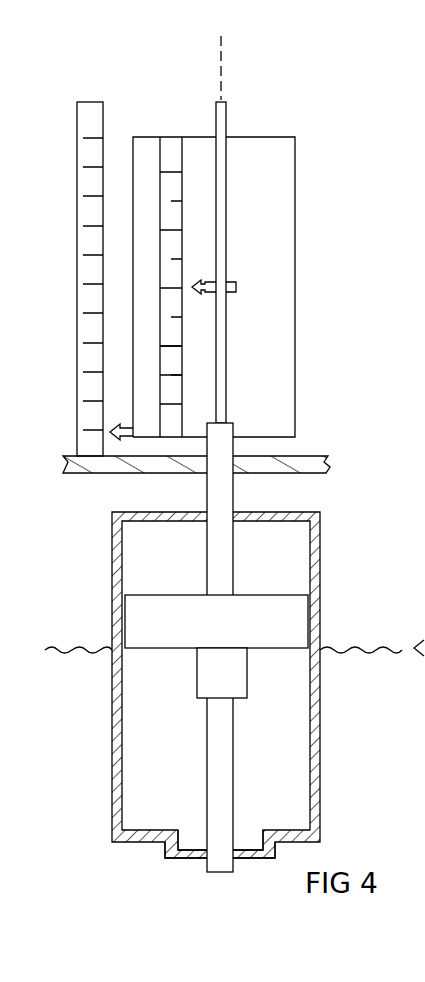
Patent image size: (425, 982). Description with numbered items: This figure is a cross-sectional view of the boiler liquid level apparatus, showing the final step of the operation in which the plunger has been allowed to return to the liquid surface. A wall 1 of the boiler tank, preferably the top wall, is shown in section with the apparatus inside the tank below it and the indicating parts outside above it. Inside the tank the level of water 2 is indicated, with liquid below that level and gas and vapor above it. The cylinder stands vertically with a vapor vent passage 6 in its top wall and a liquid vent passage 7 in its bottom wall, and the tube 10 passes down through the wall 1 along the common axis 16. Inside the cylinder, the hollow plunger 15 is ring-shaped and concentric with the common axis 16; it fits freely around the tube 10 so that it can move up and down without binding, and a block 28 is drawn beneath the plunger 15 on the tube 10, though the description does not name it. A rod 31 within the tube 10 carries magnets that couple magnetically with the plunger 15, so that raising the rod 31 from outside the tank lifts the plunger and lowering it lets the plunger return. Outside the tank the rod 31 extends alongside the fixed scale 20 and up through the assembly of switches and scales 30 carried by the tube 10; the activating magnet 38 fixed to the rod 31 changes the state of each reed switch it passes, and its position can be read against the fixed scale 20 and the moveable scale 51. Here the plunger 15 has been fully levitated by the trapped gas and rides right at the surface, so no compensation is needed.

The wall 1 is at (324, 455).
The level of water 2 is at (234, 639).
The vapor vent passage 6 is at (272, 533).
The liquid vent passage 7 is at (252, 832).
The tube 10 is at (233, 490).
The hollow plunger 15 is at (248, 596).
The common axis 16 is at (222, 48).
The fixed scale 20 is at (103, 104).
The piston boss 28 is at (148, 652).
The assembly of switches and scales 30 is at (283, 126).
The rod 31 is at (226, 108).
The activating magnet 38 is at (237, 285).
The moveable scale 51 is at (184, 363).